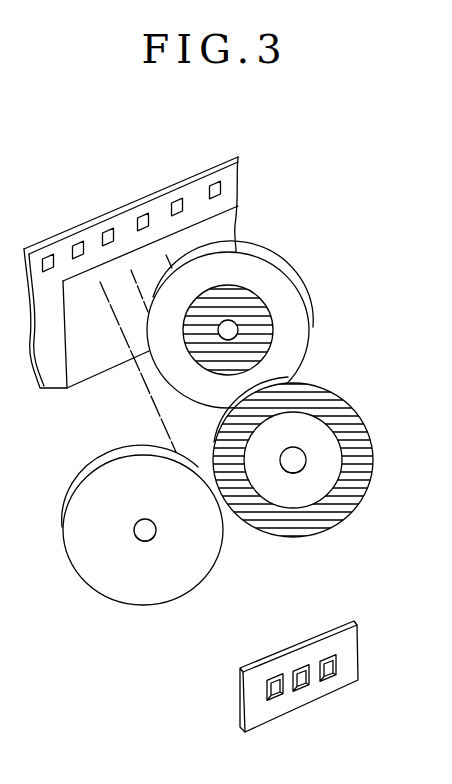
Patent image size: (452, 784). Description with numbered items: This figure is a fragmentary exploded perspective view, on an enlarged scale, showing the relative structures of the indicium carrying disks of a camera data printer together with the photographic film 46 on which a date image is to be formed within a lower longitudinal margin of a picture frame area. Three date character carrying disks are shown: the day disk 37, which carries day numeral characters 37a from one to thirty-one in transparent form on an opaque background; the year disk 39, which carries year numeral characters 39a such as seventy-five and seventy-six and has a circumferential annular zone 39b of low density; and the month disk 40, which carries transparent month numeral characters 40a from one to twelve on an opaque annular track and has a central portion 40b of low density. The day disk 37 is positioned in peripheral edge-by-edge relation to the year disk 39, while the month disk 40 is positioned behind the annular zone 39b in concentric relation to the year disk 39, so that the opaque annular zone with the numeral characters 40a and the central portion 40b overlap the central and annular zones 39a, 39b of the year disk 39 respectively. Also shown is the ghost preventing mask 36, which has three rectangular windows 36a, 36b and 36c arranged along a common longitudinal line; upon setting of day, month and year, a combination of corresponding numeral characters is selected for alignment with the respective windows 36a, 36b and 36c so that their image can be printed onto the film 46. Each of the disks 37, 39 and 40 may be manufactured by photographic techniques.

The photographic film 46 is at (230, 188).
The month disk 40 is at (251, 317).
The month numeral characters 40a is at (293, 332).
The central portion of month disk 40b is at (248, 302).
The year disk 39 is at (315, 447).
The year numeral characters 39a is at (312, 430).
The annular zone of year disk 39b is at (360, 432).
The day disk 37 is at (125, 528).
The day numeral characters 37a is at (195, 582).
The ghost preventing mask 36 is at (314, 670).
The first rectangular window 36a is at (277, 698).
The second rectangular window 36b is at (305, 688).
The third rectangular window 36c is at (330, 677).